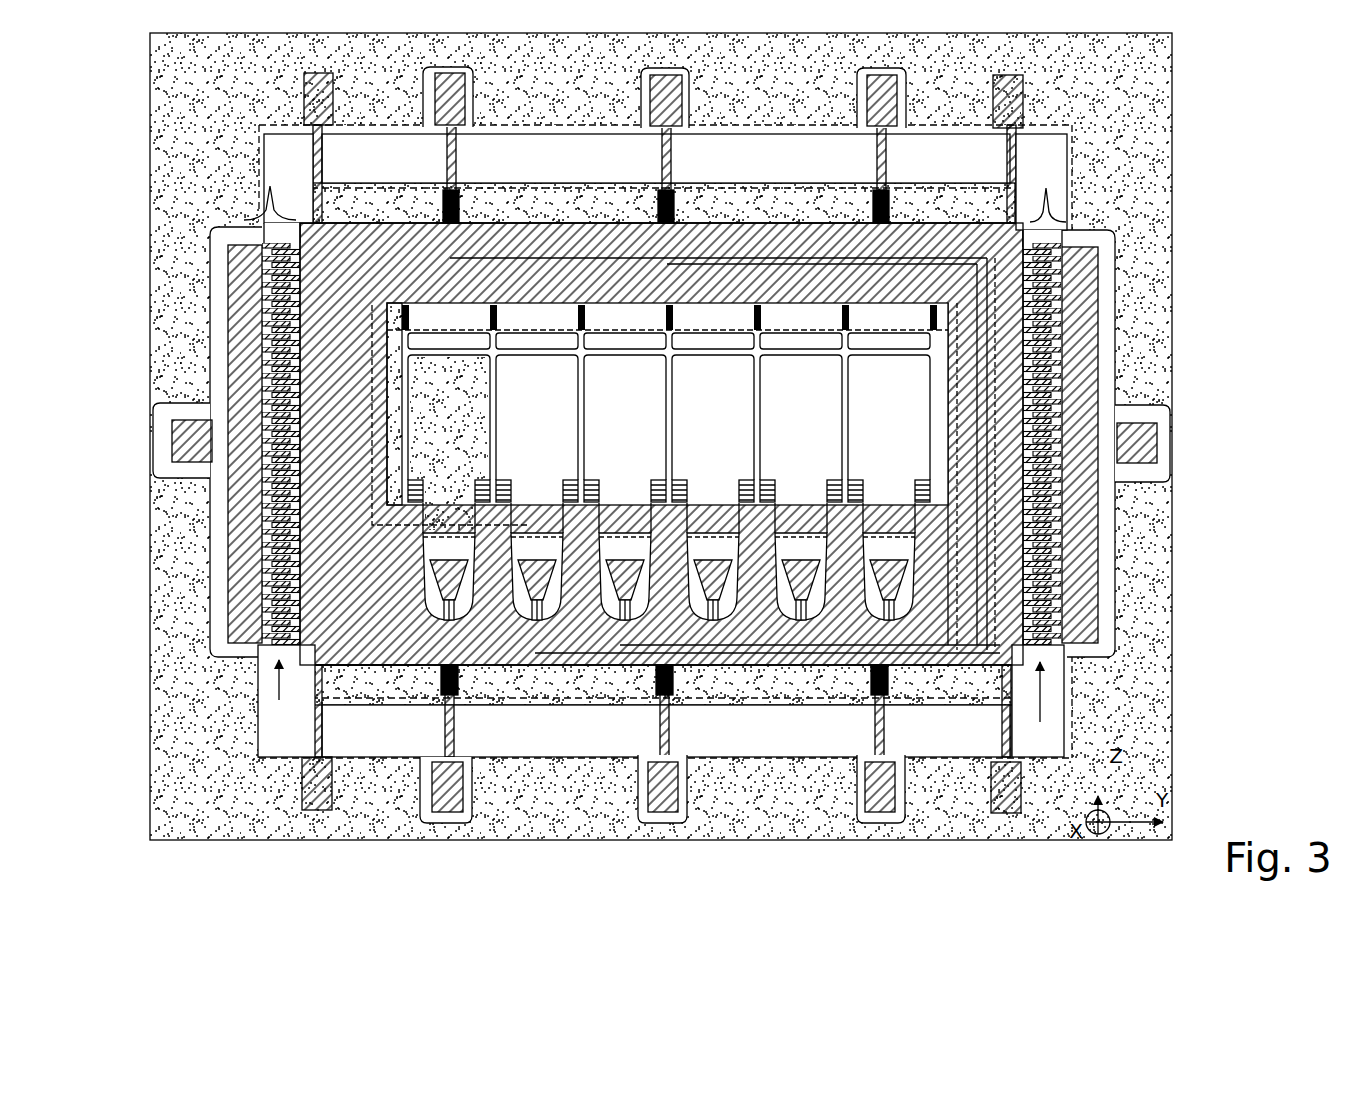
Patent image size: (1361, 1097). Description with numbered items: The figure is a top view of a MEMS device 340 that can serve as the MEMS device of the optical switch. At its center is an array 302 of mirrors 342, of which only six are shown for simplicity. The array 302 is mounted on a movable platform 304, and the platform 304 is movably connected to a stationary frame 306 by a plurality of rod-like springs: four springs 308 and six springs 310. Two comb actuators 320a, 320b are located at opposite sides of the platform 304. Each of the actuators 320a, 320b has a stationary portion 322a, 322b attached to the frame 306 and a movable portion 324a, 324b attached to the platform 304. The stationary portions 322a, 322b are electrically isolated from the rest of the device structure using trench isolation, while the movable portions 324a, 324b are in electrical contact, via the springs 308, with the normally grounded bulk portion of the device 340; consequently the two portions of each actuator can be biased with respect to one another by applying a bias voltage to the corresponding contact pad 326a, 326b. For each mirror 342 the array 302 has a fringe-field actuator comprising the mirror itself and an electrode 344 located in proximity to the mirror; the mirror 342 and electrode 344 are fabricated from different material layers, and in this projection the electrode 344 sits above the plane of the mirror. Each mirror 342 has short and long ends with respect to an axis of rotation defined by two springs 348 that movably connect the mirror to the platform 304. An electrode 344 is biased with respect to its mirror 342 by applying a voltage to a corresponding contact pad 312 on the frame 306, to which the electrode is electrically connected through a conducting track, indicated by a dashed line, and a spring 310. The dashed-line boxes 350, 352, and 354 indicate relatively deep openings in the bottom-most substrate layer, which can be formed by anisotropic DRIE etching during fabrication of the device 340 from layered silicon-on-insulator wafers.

The array 302 is at (388, 421).
The movable platform 304 is at (748, 685).
The stationary frame 306 is at (1160, 162).
The springs 308 is at (324, 160).
The springs 310 is at (457, 160).
The contact pad 312 is at (465, 98).
The comb actuator 320a is at (279, 445).
The comb actuator 320b is at (1041, 445).
The stationary portion 322a is at (228, 555).
The stationary portion 322b is at (1113, 333).
The movable portion 324a is at (295, 582).
The movable portion 324b is at (1030, 563).
The contact pad 326a is at (208, 447).
The contact pad 326b is at (1119, 448).
The MEMS device 340 is at (1268, 684).
The mirror 342 is at (429, 408).
The electrode 344 is at (669, 576).
The springs 348 is at (418, 482).
The dashed-line box 350 is at (252, 760).
The dashed-line box 352 is at (345, 703).
The dashed-line box 354 is at (372, 355).